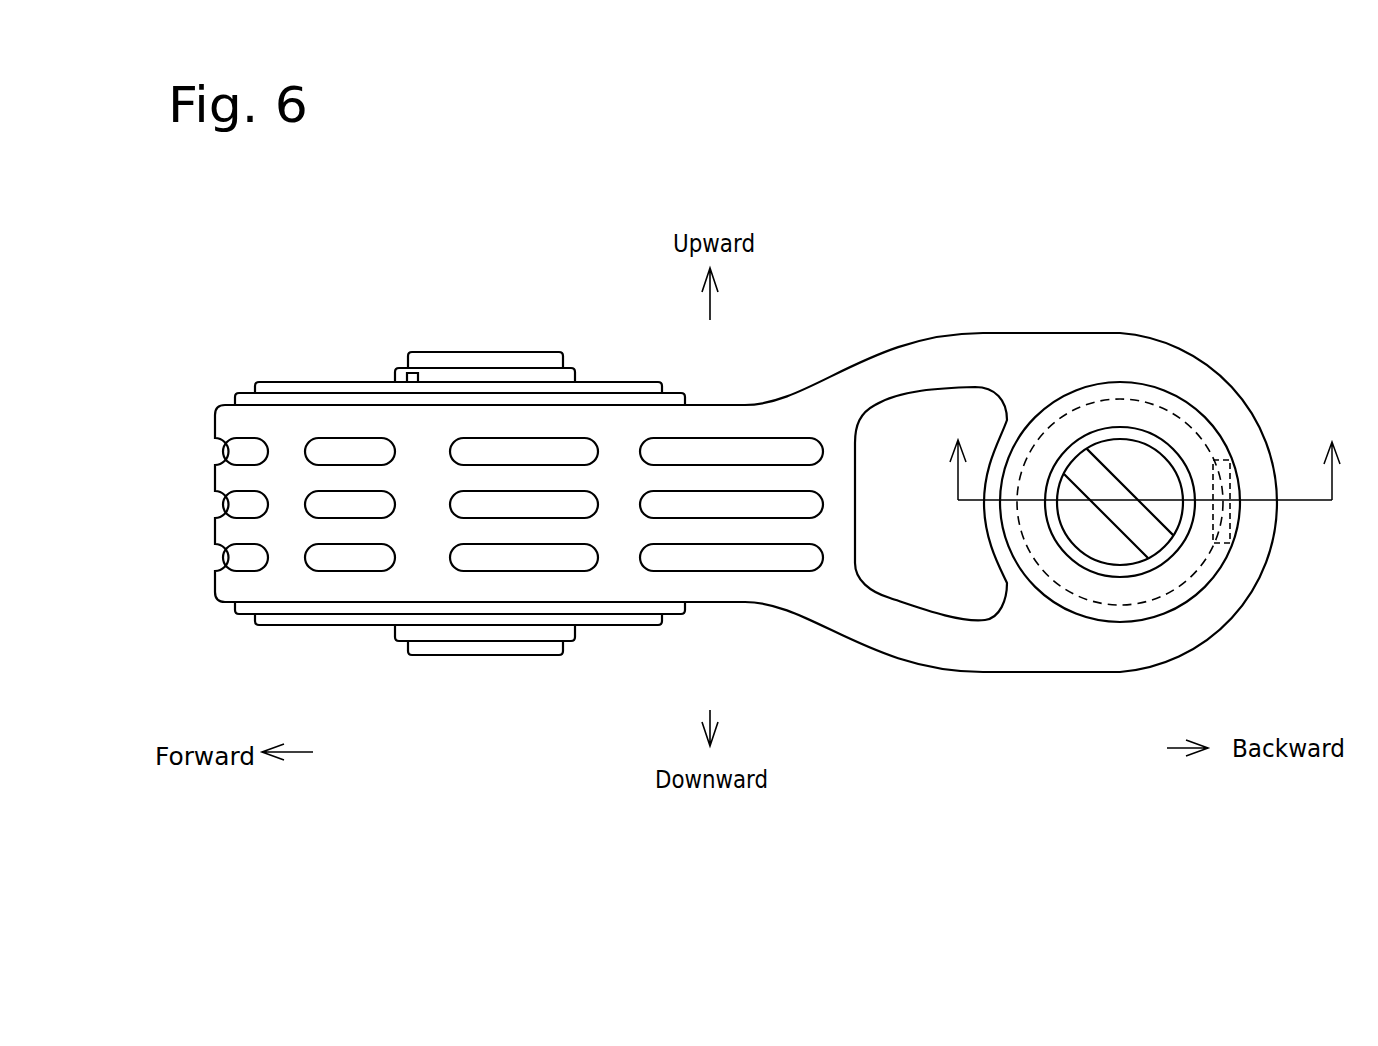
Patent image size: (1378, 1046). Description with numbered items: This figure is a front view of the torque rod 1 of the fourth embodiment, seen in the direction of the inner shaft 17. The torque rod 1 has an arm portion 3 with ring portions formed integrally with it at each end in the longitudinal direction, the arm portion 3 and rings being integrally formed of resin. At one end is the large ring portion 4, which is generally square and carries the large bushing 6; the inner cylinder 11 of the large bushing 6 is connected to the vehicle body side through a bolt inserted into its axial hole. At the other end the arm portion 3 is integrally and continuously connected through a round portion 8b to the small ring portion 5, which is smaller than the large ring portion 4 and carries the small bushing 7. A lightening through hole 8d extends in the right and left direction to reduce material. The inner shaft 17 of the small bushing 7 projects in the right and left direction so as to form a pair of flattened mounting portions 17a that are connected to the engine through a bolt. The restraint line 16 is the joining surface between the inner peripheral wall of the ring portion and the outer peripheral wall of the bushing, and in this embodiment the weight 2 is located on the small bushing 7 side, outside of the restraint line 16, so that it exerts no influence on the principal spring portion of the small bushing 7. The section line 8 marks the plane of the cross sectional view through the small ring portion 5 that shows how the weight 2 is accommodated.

The torque rod 1 is at (265, 280).
The weight 2 is at (1232, 520).
The arm portion 3 is at (724, 405).
The large ring portion 4 is at (242, 532).
The small ring portion 5 is at (1180, 628).
The large bushing 6 is at (327, 381).
The small bushing 7 is at (1150, 392).
The section line 8- 8 is at (1146, 446).
The round portion 8b is at (871, 358).
The lightening through hole 8d is at (950, 590).
The inner cylinder 11 is at (498, 352).
The restraint line 16 is at (1193, 568).
The inner shaft 17 is at (1085, 530).
The flattened mounting portion 17a is at (1132, 518).